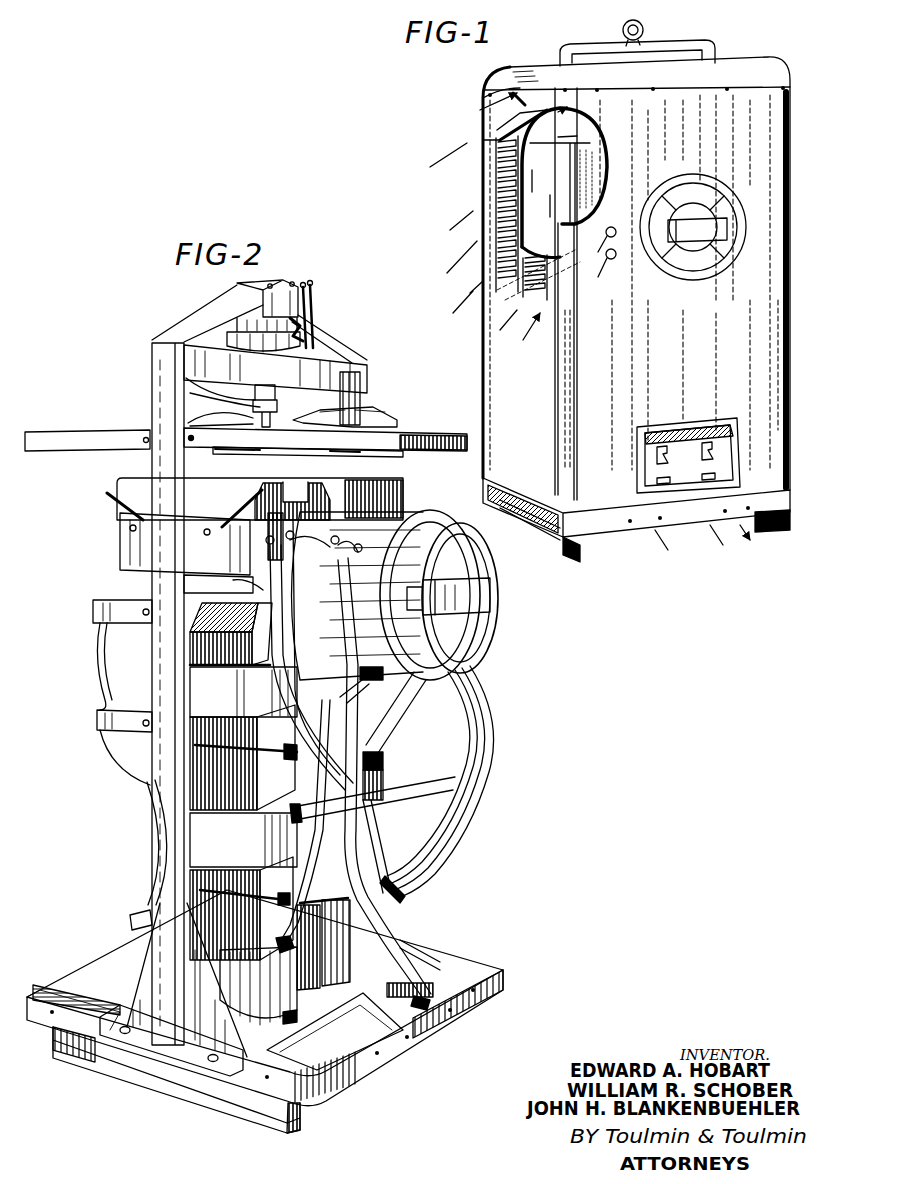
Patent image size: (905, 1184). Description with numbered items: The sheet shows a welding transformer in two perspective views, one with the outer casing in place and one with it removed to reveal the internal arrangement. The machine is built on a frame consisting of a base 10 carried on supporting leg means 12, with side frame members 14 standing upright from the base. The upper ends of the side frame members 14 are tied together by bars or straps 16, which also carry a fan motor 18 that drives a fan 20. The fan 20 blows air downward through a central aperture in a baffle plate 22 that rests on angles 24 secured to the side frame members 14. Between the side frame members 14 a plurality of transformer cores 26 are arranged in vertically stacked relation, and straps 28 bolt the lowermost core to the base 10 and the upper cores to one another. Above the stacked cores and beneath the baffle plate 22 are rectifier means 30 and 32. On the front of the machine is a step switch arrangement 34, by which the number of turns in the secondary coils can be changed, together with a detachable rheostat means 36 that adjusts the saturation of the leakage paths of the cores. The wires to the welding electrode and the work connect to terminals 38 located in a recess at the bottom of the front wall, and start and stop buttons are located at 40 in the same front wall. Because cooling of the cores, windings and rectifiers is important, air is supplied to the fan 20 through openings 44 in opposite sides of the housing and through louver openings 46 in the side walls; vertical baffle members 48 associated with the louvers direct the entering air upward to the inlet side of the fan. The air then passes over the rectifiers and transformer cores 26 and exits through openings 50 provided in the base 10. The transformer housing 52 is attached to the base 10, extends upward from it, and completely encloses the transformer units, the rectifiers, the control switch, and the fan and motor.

In FIG. 1, the base 10 is at (732, 513).
In FIG. 2, the base 10 is at (500, 968).
In FIG. 1, the supporting leg means 12 is at (775, 520).
In FIG. 2, the supporting leg means 12 is at (303, 1125).
In FIG. 2, the side frame members 14 is at (165, 826).
In FIG. 2, the bars or straps 16 is at (337, 367).
In FIG. 2, the fan motor 18 is at (307, 327).
In FIG. 2, the fan 20 is at (383, 420).
In FIG. 2, the baffle plate 22 is at (400, 454).
In FIG. 2, the angles 24 is at (470, 441).
In FIG. 2, the transformer cores 26 is at (190, 893).
In FIG. 2, the straps 28 is at (325, 1012).
In FIG. 2, the rectifier means 30 is at (140, 500).
In FIG. 2, the rectifier means 32 is at (403, 489).
In FIG. 2, the step switch arrangement 34 is at (377, 633).
In FIG. 1, the detachable rheostat means 36 is at (680, 253).
In FIG. 2, the detachable rheostat means 36 is at (450, 627).
In FIG. 1, the terminals 38 is at (700, 467).
In FIG. 1, the start and stop buttons 40 is at (606, 266).
In FIG. 1, the openings 44 is at (533, 90).
In FIG. 1, the louver openings 46 is at (520, 207).
In FIG. 1, the vertical baffle members 48 is at (553, 180).
In FIG. 2, the openings 50 is at (380, 1017).
In FIG. 1, the transformer housing 52 is at (777, 357).